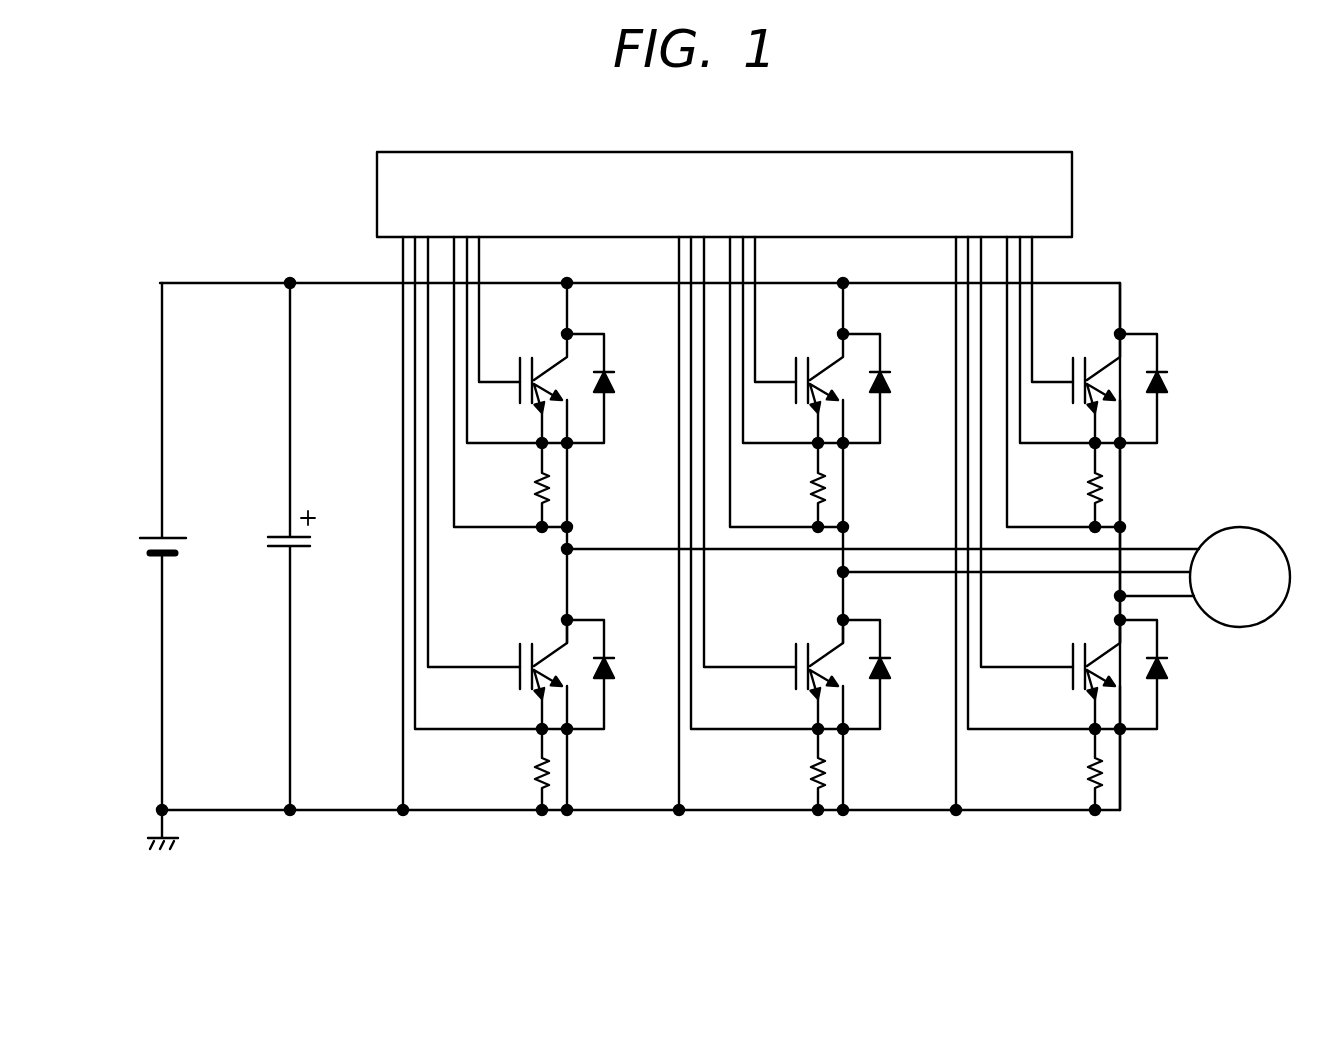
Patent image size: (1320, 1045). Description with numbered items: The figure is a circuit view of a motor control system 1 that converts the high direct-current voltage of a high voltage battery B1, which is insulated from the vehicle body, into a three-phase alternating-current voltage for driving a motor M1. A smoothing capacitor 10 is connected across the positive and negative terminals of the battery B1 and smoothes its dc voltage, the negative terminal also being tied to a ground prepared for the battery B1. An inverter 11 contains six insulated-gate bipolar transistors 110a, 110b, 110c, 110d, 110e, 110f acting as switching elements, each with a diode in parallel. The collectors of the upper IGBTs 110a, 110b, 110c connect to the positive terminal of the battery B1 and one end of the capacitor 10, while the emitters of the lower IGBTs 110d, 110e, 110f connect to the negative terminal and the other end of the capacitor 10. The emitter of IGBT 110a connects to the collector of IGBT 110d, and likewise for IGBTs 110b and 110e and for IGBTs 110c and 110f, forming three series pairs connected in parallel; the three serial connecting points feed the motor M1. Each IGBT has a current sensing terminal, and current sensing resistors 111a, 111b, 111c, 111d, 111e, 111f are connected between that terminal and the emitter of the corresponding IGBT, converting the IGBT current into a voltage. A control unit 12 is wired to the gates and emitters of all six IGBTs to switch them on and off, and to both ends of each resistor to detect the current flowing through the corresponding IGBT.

The motor control system 1 is at (1092, 110).
The smoothing capacitor 10 is at (279, 529).
The inverter 11 is at (1118, 254).
The control unit 12 is at (798, 160).
The high voltage battery B1 is at (147, 529).
The motor M1 is at (1240, 528).
The IGBT 110a is at (524, 358).
The IGBT 110b is at (800, 358).
The IGBT 110c is at (1077, 358).
The IGBT 110d is at (524, 640).
The IGBT 110e is at (800, 640).
The IGBT 110f is at (1077, 640).
The current sensing resistor 111a is at (540, 487).
The current sensing resistor 111b is at (814, 487).
The current sensing resistor 111c is at (1091, 487).
The current sensing resistor 111d is at (526, 768).
The current sensing resistor 111e is at (802, 768).
The current sensing resistor 111f is at (1079, 768).